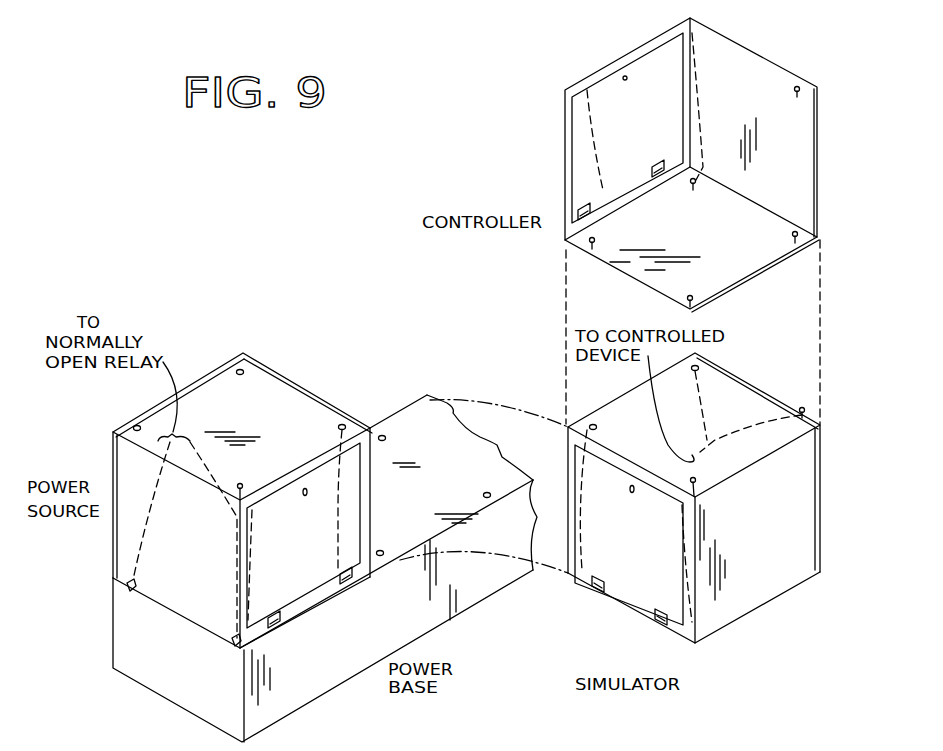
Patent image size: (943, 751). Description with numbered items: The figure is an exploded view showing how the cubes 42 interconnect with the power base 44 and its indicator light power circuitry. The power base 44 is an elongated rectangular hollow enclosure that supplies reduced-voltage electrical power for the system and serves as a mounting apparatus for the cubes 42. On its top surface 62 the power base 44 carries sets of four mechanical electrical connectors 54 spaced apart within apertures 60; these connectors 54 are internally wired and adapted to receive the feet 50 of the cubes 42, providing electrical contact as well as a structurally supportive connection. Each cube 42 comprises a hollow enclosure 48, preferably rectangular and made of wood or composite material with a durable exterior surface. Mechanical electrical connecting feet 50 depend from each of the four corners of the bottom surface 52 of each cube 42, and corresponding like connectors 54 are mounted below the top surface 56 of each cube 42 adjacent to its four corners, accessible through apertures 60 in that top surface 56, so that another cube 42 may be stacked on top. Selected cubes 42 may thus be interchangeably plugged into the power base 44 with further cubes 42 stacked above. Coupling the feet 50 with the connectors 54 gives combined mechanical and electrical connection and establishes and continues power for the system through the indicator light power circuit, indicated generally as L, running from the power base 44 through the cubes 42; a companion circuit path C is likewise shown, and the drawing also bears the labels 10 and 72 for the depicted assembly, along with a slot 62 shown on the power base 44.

The modular control system 10 is at (252, 463).
The cube 42 is at (260, 357).
The power base 44 is at (357, 660).
The hollow enclosure 48 is at (300, 382).
The mechanical electrical connecting feet 50 is at (592, 252).
The bottom surface 52 is at (667, 277).
The mechanical electrical connectors 54 is at (134, 428).
The top surface 56 is at (217, 390).
The apertures 60 is at (343, 424).
The top surface 62 is at (445, 505).
The panel 72 is at (525, 116).
The indicator light power circuit L is at (603, 155).
The control conductor C is at (708, 120).